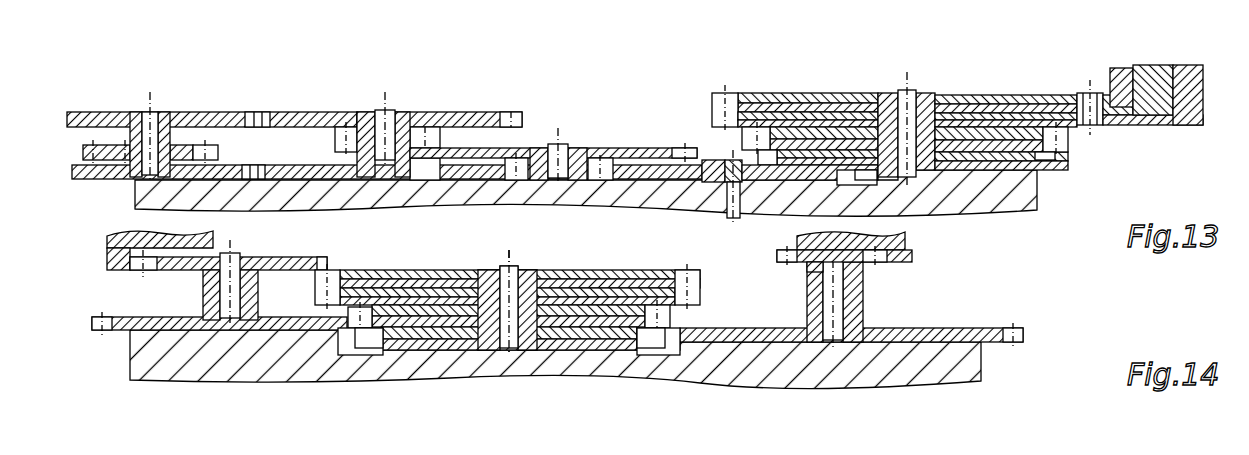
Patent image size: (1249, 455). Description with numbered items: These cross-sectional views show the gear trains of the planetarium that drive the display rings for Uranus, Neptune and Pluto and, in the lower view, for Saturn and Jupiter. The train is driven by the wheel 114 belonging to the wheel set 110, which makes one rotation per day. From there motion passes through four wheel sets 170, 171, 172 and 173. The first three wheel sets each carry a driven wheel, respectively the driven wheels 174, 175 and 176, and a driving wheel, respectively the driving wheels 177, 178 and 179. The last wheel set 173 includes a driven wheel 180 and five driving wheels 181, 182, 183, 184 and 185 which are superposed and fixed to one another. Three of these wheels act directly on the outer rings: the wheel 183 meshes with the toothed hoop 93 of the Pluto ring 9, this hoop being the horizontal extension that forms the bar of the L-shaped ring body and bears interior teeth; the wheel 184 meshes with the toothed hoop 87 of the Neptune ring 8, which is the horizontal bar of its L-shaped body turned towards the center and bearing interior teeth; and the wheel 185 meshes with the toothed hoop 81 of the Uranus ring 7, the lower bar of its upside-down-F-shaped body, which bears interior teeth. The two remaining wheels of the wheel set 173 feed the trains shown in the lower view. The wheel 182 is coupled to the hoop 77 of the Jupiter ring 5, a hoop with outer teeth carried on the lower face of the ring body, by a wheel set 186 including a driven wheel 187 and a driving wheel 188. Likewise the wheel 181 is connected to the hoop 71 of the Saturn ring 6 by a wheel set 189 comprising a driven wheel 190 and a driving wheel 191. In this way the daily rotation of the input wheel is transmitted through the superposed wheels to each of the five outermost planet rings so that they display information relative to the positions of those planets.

In FIG. 14, the ring 5 is at (148, 228).
In FIG. 14, the ring 6 is at (888, 231).
In FIG. 13, the ring 7 is at (1110, 63).
In FIG. 13, the ring 8 is at (1147, 60).
In FIG. 13, the ring 9 is at (1186, 61).
In FIG. 14, the hoop 71 is at (912, 256).
In FIG. 14, the hoop 77 is at (107, 258).
In FIG. 13, the lower bar 81 is at (1135, 100).
In FIG. 13, the horizontal bar 87 is at (1155, 100).
In FIG. 13, the horizontal extension 93 is at (1160, 125).
In FIG. 13, the wheel set 110 is at (153, 107).
In FIG. 13, the wheel 114 is at (215, 112).
In FIG. 13, the wheel set 170 is at (398, 103).
In FIG. 13, the wheel set 171 is at (575, 135).
In FIG. 13, the wheel set 172 is at (745, 208).
In FIG. 13, the wheel set 173 is at (928, 85).
In FIG. 14, the wheel set 173 is at (530, 265).
In FIG. 13, the driven wheel 174 is at (485, 112).
In FIG. 13, the driven wheel 175 is at (635, 148).
In FIG. 13, the driven wheel 176 is at (650, 190).
In FIG. 13, the driving wheel 177 is at (335, 142).
In FIG. 13, the driving wheel 178 is at (505, 171).
In FIG. 13, the driving wheel 179 is at (712, 160).
In FIG. 13, the driven wheel 180 is at (1060, 168).
In FIG. 13, the driving wheel 181 is at (1055, 156).
In FIG. 14, the driving wheel 181 is at (410, 335).
In FIG. 13, the driving wheel 182 is at (1068, 140).
In FIG. 14, the driving wheel 182 is at (668, 318).
In FIG. 13, the driving wheel 183 is at (848, 93).
In FIG. 13, the driving wheel 184 is at (755, 93).
In FIG. 13, the driving wheel 185 is at (790, 93).
In FIG. 14, the wheel set 186 is at (223, 353).
In FIG. 14, the driven wheel 187 is at (105, 332).
In FIG. 14, the driving wheel 188 is at (318, 257).
In FIG. 14, the wheel set 189 is at (873, 298).
In FIG. 14, the driven wheel 190 is at (1023, 335).
In FIG. 14, the driving wheel 191 is at (800, 262).